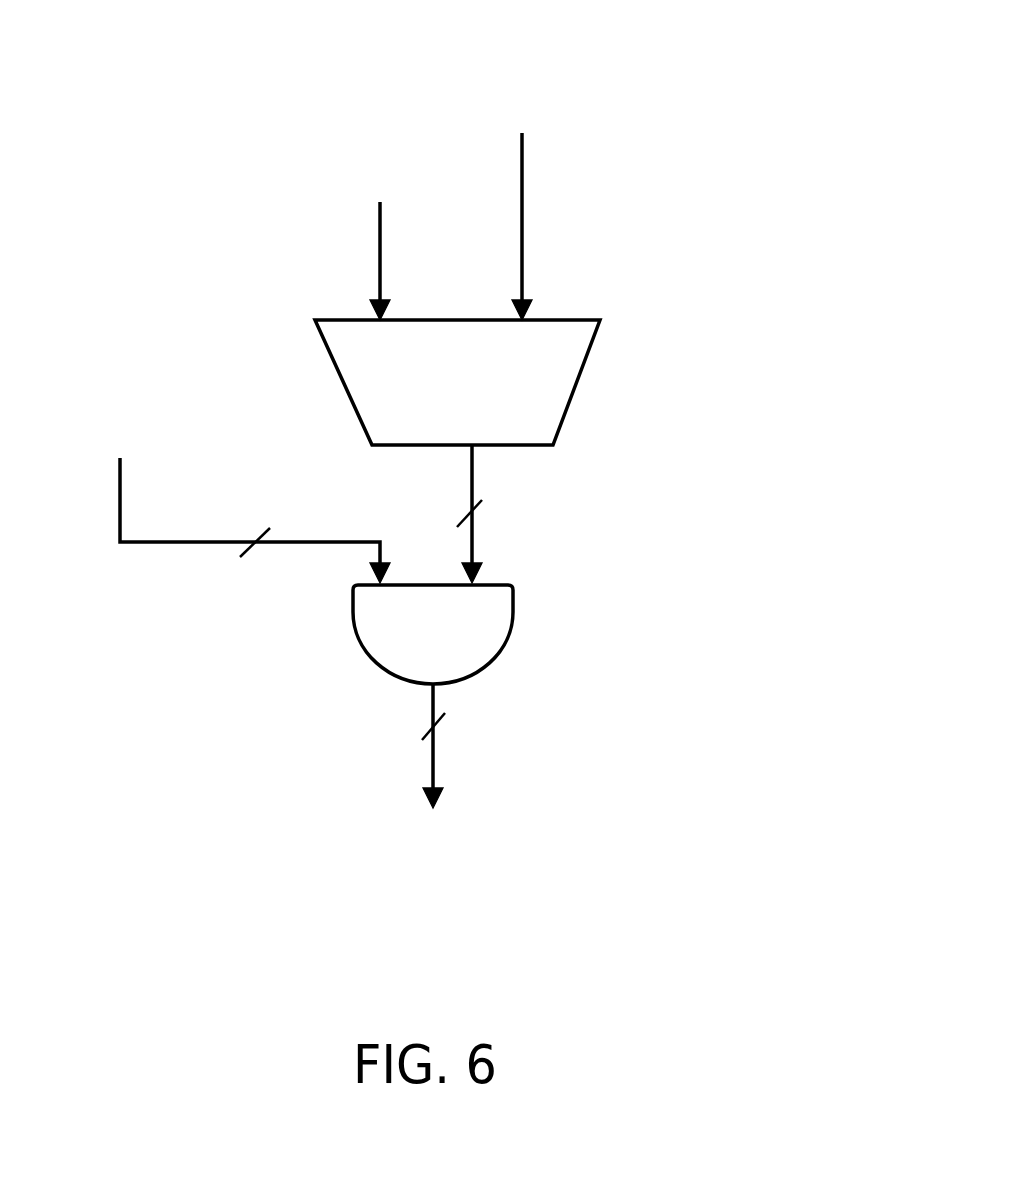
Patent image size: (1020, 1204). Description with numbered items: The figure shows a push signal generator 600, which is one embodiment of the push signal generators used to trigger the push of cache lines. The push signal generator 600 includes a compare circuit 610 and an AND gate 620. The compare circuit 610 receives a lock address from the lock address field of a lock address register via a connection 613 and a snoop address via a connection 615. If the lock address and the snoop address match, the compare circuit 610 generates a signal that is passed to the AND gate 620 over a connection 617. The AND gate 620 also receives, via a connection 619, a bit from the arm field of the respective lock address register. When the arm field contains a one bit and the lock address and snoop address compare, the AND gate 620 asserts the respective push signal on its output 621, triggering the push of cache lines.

The push signal generator 600 is at (762, 218).
The compare circuit 610 is at (580, 380).
The connection 613 is at (380, 242).
The connection 615 is at (523, 238).
The connection 617 is at (474, 468).
The connection 619 is at (170, 542).
The AND gate 620 is at (515, 611).
The push signal output 621 is at (435, 770).